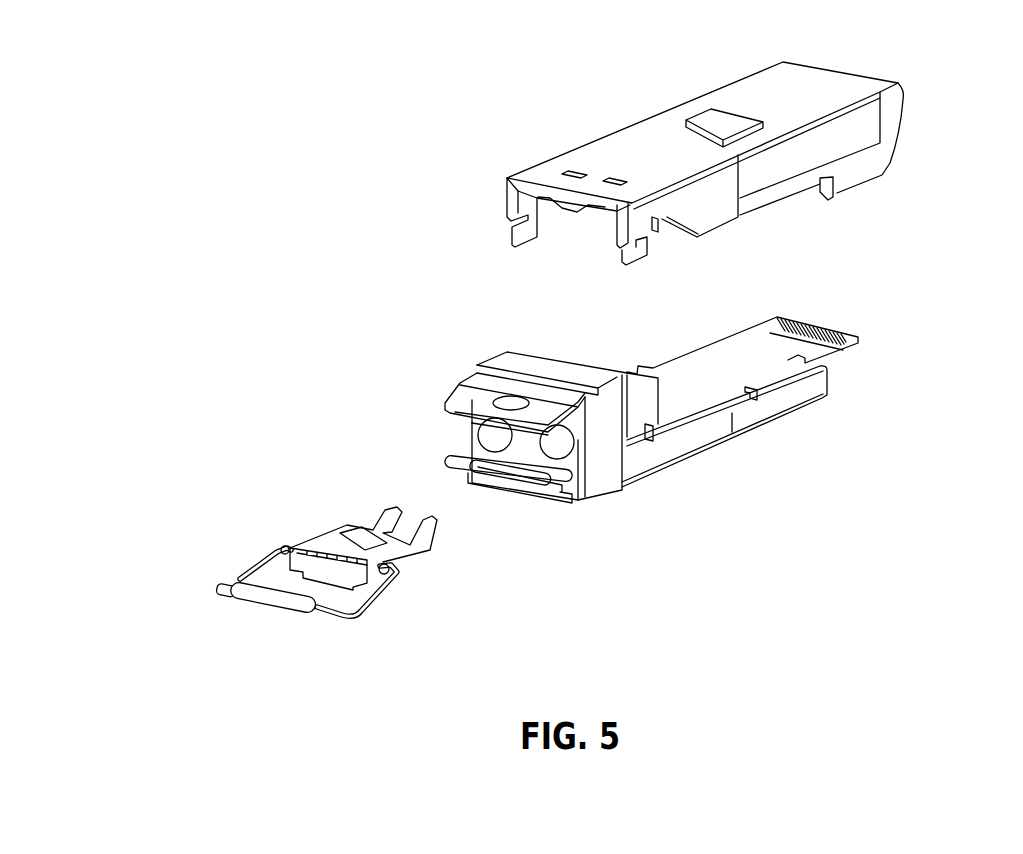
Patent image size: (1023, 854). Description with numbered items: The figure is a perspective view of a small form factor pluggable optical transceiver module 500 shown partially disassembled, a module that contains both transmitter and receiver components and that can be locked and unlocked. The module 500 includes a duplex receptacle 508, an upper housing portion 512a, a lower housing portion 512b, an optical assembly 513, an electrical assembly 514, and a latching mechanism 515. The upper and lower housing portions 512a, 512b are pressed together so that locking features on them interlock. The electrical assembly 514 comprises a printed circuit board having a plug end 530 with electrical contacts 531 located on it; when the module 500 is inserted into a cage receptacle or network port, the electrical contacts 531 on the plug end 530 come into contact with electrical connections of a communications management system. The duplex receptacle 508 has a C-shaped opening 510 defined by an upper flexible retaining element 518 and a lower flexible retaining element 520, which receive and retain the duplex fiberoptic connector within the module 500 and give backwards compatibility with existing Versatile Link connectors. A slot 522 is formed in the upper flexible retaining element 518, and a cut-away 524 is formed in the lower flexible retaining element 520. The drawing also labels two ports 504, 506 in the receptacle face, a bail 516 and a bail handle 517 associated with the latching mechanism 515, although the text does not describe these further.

The SFP optical transceiver module 500 is at (98, 116).
The first optical port 504 is at (492, 435).
The second optical port 506 is at (563, 445).
The duplex receptacle 508 is at (545, 368).
The C-shaped opening 510 is at (413, 413).
The upper housing portion 512a is at (511, 91).
The lower housing portion 512b is at (672, 475).
The optical assembly 513 is at (646, 404).
The electrical assembly 514 is at (686, 366).
The latching mechanism 515 is at (322, 513).
The bail 516 is at (422, 561).
The bail handle 517 is at (244, 554).
The upper flexible retaining element 518 is at (462, 412).
The lower flexible retaining element 520 is at (537, 481).
The slot 522 is at (513, 402).
The cut-away 524 is at (485, 479).
The plug end 530 is at (891, 348).
The electrical contacts 531 is at (817, 326).